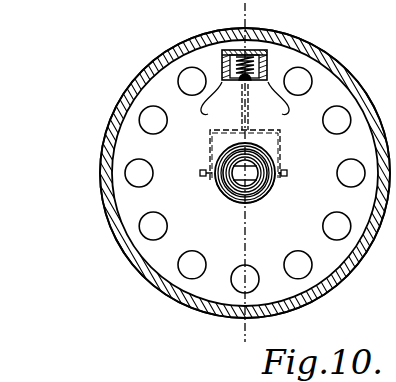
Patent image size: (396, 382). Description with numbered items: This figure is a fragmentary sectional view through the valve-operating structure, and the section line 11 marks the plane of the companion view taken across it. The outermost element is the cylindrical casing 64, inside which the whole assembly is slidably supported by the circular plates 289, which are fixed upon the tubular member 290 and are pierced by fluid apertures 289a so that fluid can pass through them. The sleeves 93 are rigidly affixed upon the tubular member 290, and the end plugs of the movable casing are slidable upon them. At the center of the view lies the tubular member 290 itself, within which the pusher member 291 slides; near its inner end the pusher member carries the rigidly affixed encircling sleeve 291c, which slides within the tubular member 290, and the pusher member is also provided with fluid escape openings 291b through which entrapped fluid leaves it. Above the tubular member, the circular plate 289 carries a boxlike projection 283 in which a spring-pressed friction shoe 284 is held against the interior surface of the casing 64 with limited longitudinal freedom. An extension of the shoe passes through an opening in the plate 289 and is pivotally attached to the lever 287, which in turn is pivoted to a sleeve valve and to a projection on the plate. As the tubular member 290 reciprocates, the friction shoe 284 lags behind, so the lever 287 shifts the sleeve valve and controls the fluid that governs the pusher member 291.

The section line 11- 11 is at (223, 13).
The cylindrical casing 64 is at (143, 265).
The sleeves 93 is at (278, 179).
The boxlike projections 283 is at (286, 104).
The friction shoes 284 is at (224, 108).
The lever 287 is at (279, 134).
The circular plates 289 is at (155, 100).
The fluid apertures 289a is at (192, 81).
The tubular member 290 is at (262, 192).
The pusher member 291 is at (211, 168).
The fluid escape openings 291b is at (268, 165).
The encircling sleeves 291c is at (230, 197).